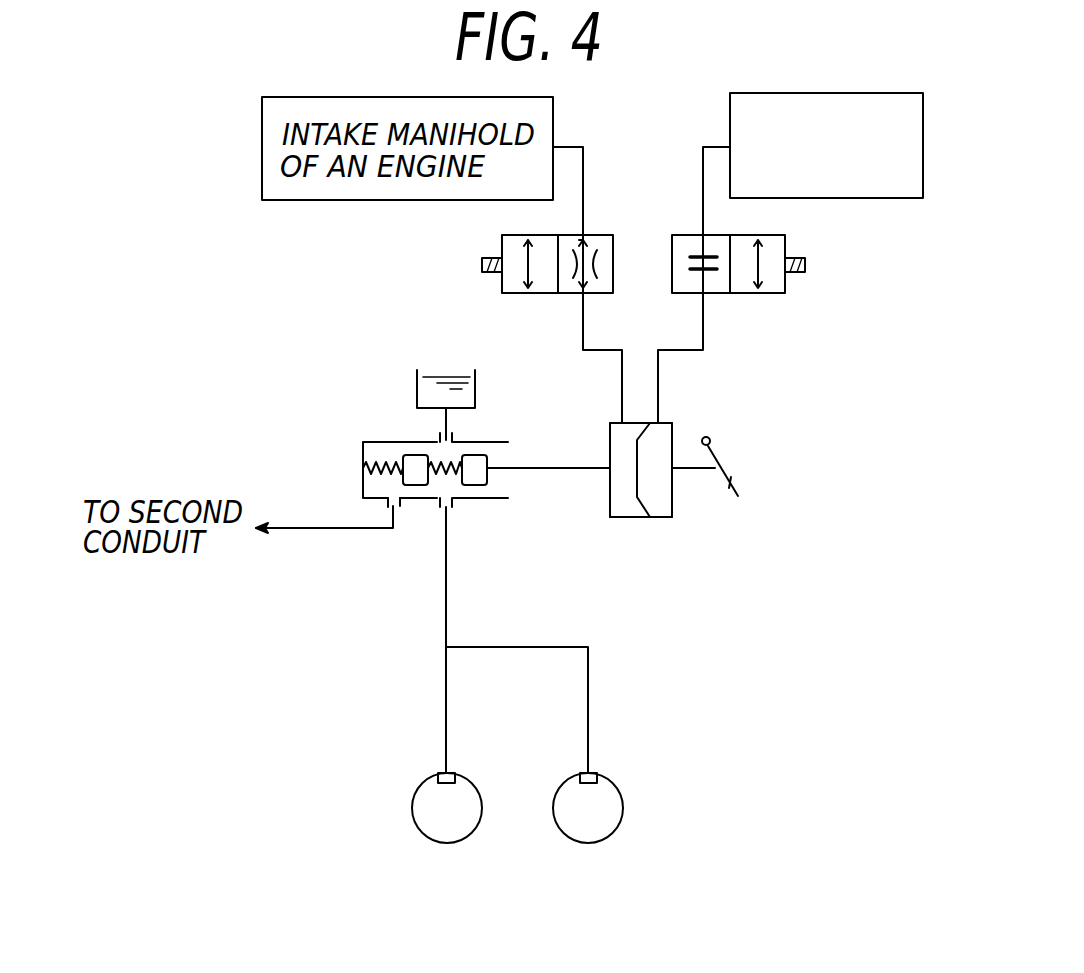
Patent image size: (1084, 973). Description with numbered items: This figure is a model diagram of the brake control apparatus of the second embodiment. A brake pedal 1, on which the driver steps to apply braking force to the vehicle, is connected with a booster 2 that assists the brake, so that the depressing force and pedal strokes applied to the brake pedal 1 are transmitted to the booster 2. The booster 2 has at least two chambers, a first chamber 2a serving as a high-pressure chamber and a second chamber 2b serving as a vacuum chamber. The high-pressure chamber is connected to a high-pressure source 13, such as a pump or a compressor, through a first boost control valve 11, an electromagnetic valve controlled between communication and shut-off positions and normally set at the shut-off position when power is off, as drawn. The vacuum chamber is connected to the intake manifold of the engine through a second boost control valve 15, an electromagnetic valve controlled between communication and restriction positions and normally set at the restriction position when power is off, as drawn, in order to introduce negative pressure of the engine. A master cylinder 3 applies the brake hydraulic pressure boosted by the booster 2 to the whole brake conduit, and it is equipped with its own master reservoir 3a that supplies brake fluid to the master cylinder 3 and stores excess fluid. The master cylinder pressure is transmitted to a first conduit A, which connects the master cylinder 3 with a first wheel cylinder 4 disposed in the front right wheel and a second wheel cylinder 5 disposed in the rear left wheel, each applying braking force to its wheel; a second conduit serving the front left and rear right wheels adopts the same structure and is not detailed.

The brake pedal 1 is at (718, 462).
The booster 2 is at (644, 517).
The first chamber 2a is at (672, 505).
The second chamber 2b is at (610, 506).
The master cylinder 3 is at (363, 452).
The master reservoir 3a is at (417, 378).
The first wheel cylinder 4 is at (455, 773).
The second wheel cylinder 5 is at (597, 773).
The first boost control valve 11 is at (787, 236).
The high-pressure source 13 is at (912, 93).
The second boost control valve 15 is at (502, 236).
The first conduit A is at (446, 597).